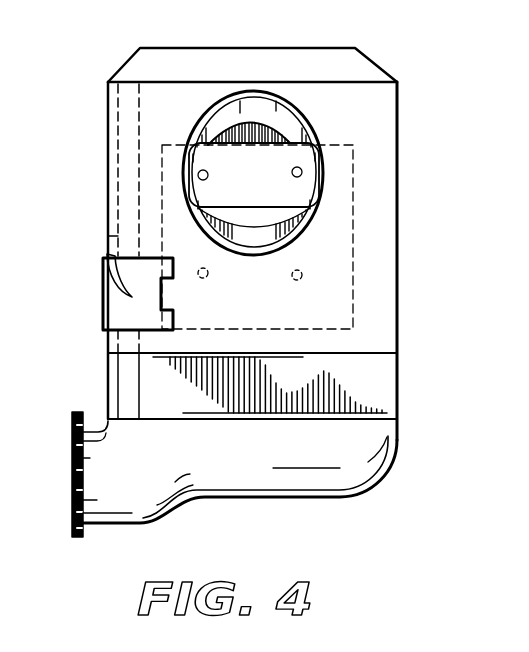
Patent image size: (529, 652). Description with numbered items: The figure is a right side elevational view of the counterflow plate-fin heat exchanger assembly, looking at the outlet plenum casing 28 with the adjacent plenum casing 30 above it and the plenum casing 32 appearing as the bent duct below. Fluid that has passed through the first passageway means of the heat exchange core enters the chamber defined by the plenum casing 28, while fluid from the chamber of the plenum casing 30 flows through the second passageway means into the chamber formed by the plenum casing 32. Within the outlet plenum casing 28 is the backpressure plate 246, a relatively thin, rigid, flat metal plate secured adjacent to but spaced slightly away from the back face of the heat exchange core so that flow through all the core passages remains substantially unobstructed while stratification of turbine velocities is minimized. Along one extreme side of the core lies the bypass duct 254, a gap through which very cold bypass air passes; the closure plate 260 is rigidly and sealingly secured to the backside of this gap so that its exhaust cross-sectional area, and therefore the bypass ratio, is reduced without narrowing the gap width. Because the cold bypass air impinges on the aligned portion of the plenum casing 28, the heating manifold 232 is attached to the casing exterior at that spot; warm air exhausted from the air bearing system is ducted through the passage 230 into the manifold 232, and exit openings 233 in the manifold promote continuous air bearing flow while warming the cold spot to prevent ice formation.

The plenum casing 30 is at (350, 48).
The plenum casing 28 is at (259, 62).
The backpressure plate 246 is at (278, 198).
The closure plate 260 is at (130, 144).
The bypass duct 254 is at (108, 236).
The passage 230 is at (108, 284).
The heating manifold 232 is at (103, 318).
The exit openings 233 is at (173, 295).
The plenum casing 32 is at (142, 516).